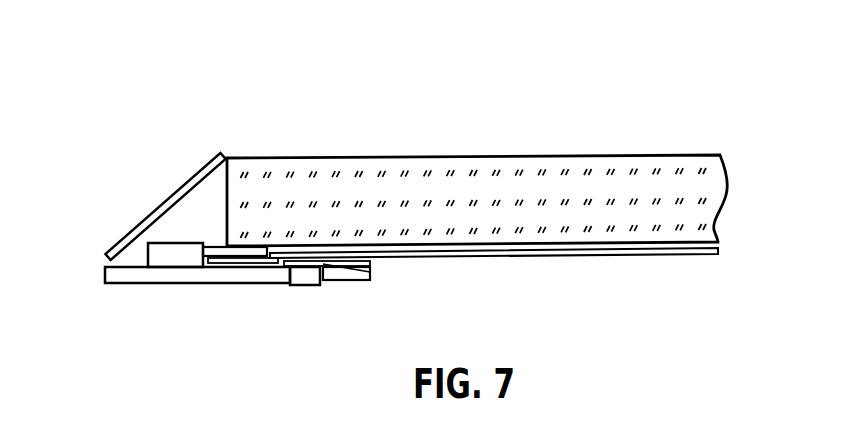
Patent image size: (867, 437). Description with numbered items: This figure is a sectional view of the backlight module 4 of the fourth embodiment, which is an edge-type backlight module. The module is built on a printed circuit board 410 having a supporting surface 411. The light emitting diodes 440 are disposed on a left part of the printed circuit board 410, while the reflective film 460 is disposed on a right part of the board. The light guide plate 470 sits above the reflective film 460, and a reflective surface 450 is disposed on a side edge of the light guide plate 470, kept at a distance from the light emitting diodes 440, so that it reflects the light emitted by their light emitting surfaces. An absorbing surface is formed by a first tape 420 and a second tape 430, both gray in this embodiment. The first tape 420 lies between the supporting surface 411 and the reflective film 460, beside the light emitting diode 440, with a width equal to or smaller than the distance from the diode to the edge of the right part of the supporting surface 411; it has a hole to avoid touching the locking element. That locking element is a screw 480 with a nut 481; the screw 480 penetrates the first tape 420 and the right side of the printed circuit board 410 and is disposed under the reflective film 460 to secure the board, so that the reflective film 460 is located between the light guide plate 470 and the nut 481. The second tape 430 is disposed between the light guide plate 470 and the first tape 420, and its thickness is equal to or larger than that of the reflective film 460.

The backlight module 4 is at (159, 102).
The printed circuit board 410 is at (284, 270).
The supporting surface 411 is at (272, 264).
The first tape 420 is at (262, 257).
The second tape 430 is at (212, 266).
The light emitting diodes 440 is at (174, 250).
The reflective surface 450 is at (131, 235).
The reflective film 460 is at (588, 254).
The light guide plate 470 is at (703, 201).
The screw 480 is at (314, 281).
The nut 481 is at (371, 265).